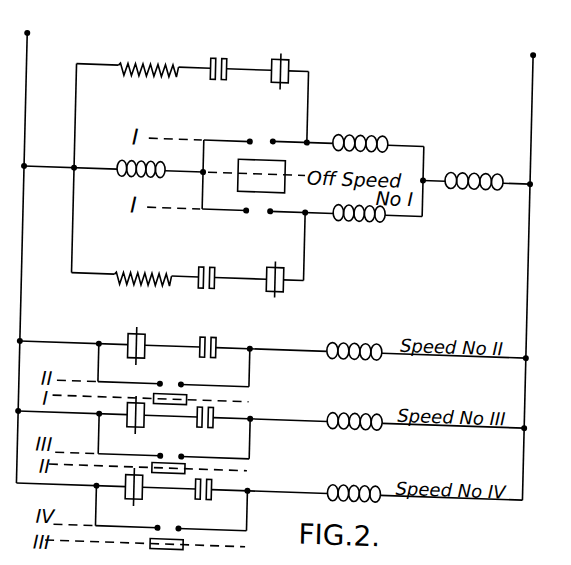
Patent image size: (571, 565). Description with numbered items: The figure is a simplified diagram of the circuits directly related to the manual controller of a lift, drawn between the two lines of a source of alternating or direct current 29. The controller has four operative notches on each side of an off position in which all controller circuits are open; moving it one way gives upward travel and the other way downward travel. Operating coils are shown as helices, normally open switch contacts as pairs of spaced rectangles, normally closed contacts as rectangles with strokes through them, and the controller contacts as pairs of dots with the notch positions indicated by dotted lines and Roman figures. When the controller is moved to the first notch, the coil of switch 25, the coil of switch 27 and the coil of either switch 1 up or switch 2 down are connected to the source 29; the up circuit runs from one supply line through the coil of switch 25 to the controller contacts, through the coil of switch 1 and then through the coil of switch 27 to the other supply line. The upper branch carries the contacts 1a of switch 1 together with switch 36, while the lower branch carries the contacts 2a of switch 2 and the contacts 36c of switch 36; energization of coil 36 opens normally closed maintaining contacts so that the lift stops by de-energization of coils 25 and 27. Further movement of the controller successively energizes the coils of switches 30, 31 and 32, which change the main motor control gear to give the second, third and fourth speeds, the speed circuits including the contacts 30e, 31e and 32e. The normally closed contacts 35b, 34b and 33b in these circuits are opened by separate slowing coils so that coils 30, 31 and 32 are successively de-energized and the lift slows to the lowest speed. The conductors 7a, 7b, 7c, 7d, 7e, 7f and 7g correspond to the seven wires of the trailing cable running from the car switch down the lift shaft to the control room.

The source of current 29 is at (31, 34).
The contacts of switch 1 1a is at (215, 74).
The switch 36 is at (287, 62).
The conductor 7c is at (282, 129).
The switch 1 up 1 is at (361, 124).
The switch 27 is at (489, 155).
The switch 25 is at (205, 164).
The conductor 7a is at (206, 165).
The conductor 7d is at (293, 206).
The switch 2 down 2 is at (357, 210).
The contacts of switch 2 2a is at (219, 256).
The contacts of switch 36 36c is at (289, 273).
The conductor 7b is at (32, 311).
The normally closed contacts of switch 35 35b is at (149, 340).
The contacts of switch 30 30e is at (227, 333).
The switch 30 operating coil 30 is at (361, 328).
The conductor 7e is at (259, 364).
The normally closed contacts of switch 34 34b is at (141, 421).
The contacts of switch 31 31e is at (214, 421).
The switch 31 operating coil 31 is at (362, 398).
The conductor 7f is at (262, 437).
The normally closed contacts of switch 33 33b is at (151, 492).
The contacts of switch 32 32e is at (216, 494).
The switch 32 operating coil 32 is at (361, 470).
The conductor 7g is at (261, 499).